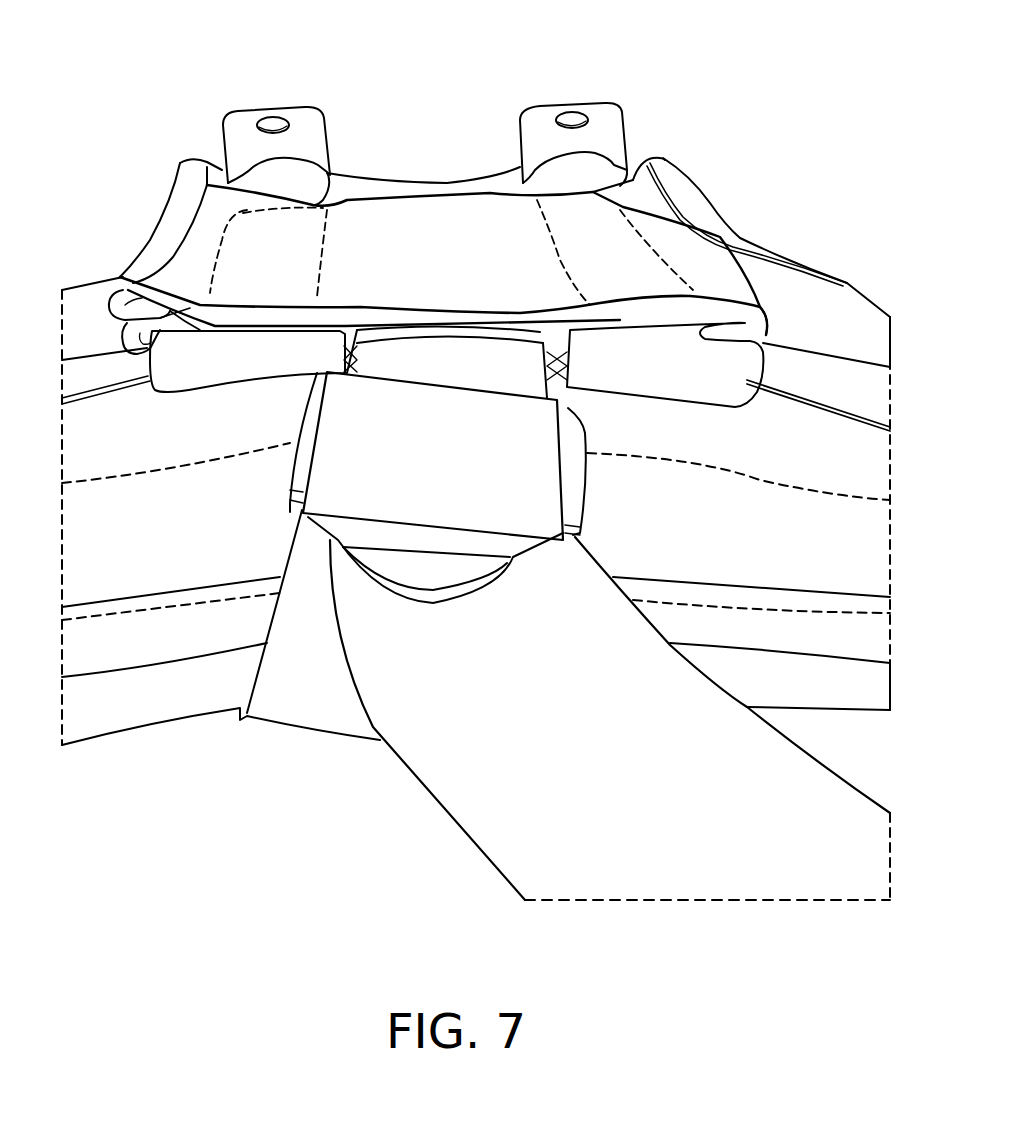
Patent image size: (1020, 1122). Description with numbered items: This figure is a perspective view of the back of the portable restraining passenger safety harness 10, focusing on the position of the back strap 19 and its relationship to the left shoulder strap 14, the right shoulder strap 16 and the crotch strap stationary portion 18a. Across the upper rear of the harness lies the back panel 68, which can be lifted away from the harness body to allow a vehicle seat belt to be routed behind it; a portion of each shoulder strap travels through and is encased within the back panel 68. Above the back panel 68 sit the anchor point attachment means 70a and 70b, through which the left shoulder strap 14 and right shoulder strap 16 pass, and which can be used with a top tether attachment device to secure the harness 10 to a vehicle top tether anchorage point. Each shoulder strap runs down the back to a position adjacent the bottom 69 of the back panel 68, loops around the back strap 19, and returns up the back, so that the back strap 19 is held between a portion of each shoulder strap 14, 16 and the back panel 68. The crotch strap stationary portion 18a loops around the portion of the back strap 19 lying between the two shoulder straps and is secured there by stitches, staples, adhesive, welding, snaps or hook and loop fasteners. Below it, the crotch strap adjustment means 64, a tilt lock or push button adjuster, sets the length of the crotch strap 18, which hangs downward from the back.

The portable restraining passenger safety harness 10 is at (140, 114).
The left shoulder strap 14 is at (262, 362).
The right shoulder strap 16 is at (662, 368).
The crotch strap 18 is at (428, 800).
The crotch strap stationary portion 18a is at (473, 372).
The back strap 19 is at (837, 388).
The crotch strap adjustment means 64 is at (447, 452).
The back panel 68 is at (450, 257).
The bottom of the back panel 69 is at (186, 309).
The anchor point attachment means 70a is at (298, 113).
The anchor point attachment means 70b is at (587, 107).